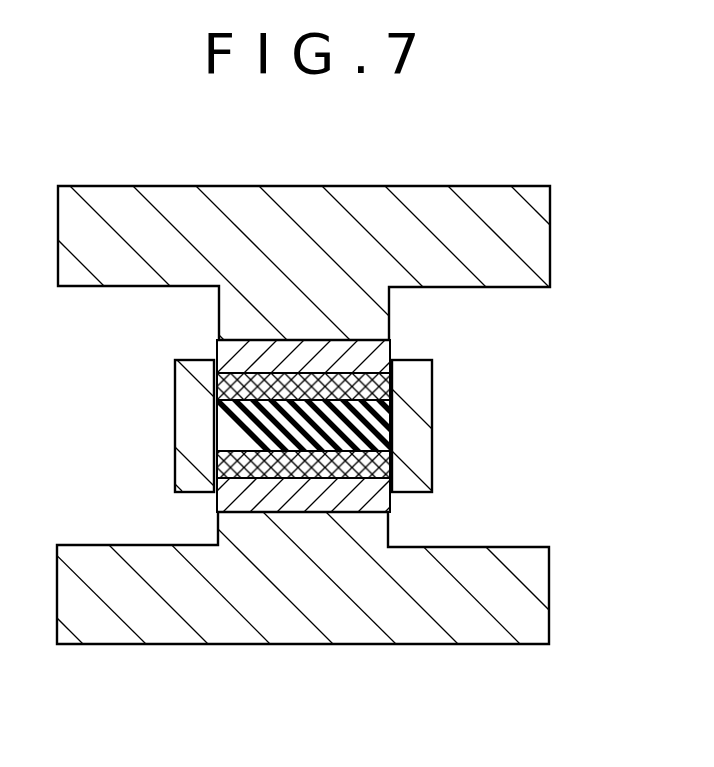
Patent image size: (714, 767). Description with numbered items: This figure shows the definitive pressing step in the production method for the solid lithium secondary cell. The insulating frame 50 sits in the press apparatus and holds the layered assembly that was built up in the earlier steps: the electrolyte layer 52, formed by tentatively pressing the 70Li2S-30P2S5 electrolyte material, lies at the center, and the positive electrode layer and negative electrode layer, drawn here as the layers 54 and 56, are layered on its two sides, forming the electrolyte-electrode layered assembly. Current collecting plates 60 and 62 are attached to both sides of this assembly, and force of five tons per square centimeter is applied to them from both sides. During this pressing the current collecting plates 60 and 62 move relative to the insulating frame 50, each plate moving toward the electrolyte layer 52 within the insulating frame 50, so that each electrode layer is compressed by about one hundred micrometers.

The insulating frame 50 is at (417, 373).
The electrolyte layer 52 is at (393, 423).
The upper intermediate layer 54 is at (393, 390).
The lower intermediate layer 56 is at (393, 462).
The current collecting plate 60 is at (380, 350).
The current collecting plate 62 is at (380, 500).